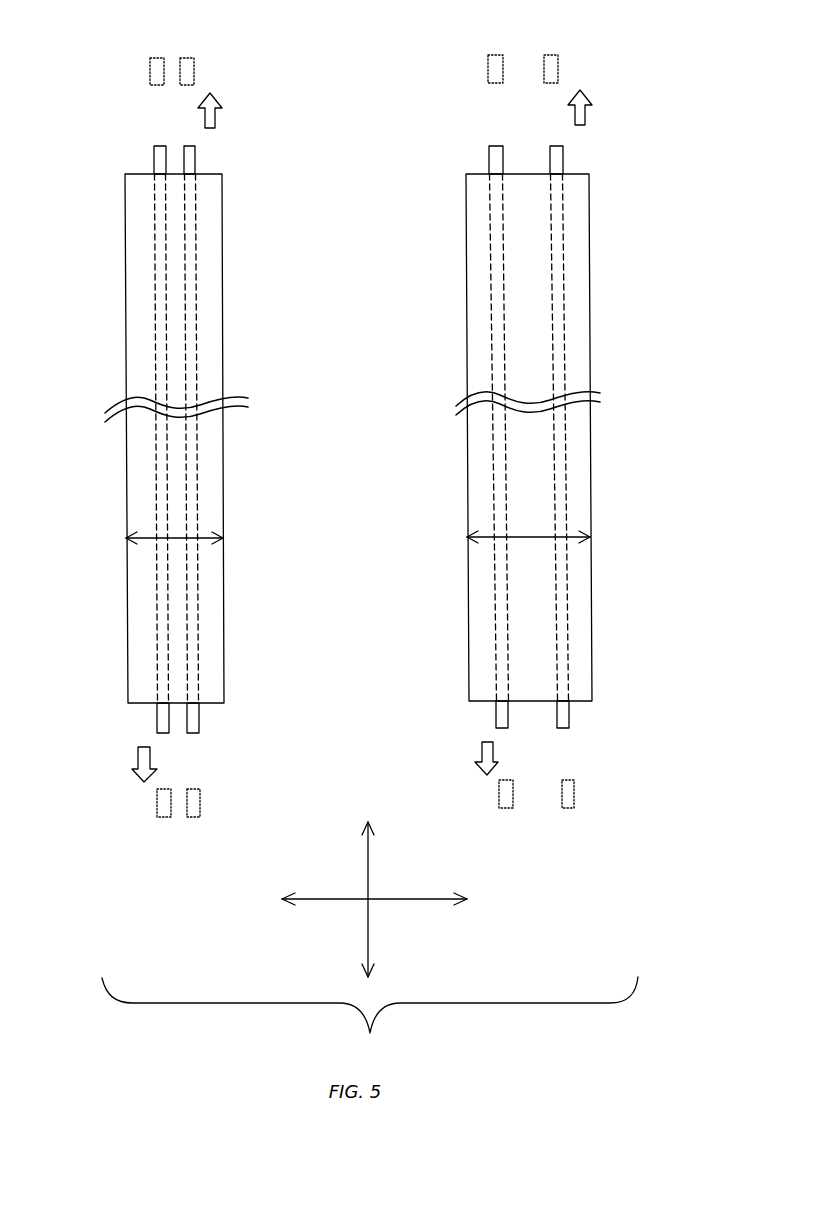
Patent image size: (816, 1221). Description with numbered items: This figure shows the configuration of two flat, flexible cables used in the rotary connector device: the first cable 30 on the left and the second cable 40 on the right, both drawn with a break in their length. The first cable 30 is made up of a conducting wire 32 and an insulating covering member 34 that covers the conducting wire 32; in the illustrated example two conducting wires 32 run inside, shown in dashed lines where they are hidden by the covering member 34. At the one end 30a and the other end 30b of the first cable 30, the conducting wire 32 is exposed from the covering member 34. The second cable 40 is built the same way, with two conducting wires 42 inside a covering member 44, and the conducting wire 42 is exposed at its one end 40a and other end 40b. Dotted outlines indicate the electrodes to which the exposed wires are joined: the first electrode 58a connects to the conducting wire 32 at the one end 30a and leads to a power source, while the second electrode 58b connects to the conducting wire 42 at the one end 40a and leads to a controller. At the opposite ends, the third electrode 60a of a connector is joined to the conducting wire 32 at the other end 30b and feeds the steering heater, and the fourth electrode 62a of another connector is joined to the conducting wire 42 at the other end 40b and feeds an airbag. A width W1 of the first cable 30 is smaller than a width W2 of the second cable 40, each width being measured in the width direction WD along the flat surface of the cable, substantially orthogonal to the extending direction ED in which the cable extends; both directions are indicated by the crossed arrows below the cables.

The first cable 30 is at (171, 408).
The one end of the first cable 30a is at (133, 158).
The other end of the first cable 30b is at (133, 724).
The conducting wire 32 is at (187, 147).
The covering member 34 is at (213, 295).
The second cable 40 is at (554, 406).
The one end of the second cable 40a is at (471, 158).
The other end of the second cable 40b is at (475, 716).
The conducting wire 42 is at (553, 143).
The covering member 44 is at (575, 277).
The first electrode 58a is at (187, 58).
The second electrode 58b is at (550, 55).
The third electrode 60a is at (165, 817).
The fourth electrode 62a is at (507, 808).
The width of the first cable W1 is at (177, 537).
The width of the second cable W2 is at (530, 537).
The extending direction ED is at (367, 862).
The width direction WD is at (413, 898).